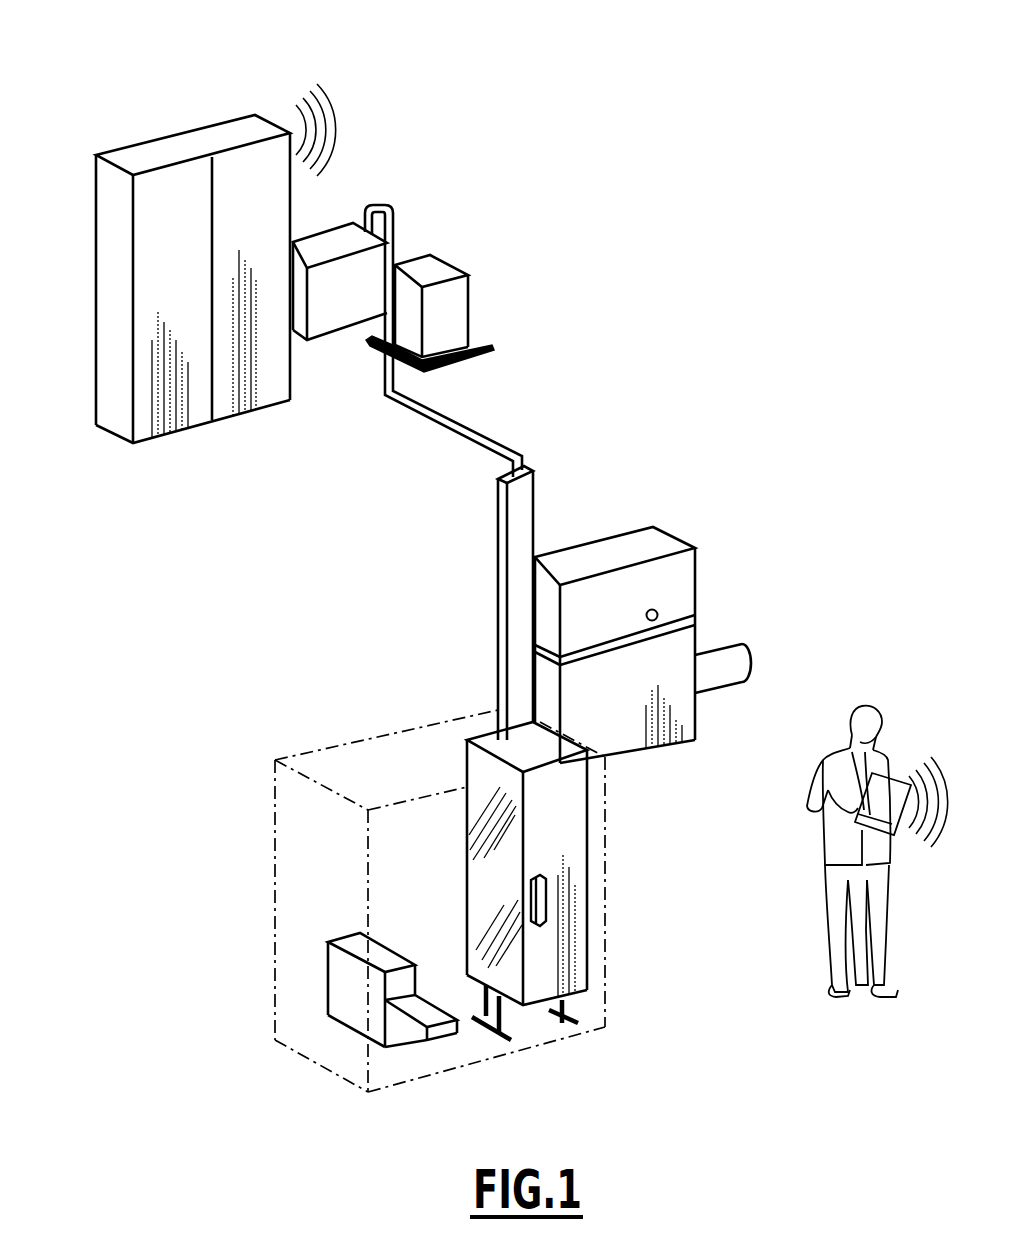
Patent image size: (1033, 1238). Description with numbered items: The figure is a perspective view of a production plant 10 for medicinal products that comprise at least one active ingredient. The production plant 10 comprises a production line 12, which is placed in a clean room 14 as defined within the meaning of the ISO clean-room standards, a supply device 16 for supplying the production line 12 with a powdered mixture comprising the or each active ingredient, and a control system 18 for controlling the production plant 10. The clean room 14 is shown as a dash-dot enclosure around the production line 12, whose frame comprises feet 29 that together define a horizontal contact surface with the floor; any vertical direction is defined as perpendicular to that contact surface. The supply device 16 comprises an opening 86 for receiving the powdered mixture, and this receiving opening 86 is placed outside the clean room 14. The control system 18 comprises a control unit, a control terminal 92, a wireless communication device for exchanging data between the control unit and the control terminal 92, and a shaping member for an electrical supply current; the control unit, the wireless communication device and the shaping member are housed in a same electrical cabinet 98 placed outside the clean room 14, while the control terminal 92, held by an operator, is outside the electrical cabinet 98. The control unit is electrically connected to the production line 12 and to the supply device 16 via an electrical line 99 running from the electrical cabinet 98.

The production plant 10 is at (683, 268).
The production line 12 is at (631, 981).
The clean room 14 is at (385, 727).
The supply device 16 is at (615, 508).
The control system 18 is at (198, 92).
The feet 29 is at (502, 1018).
The opening 86 is at (752, 656).
The control terminal 92 is at (893, 770).
The electrical cabinet 98 is at (115, 285).
The electrical line 99 is at (448, 437).